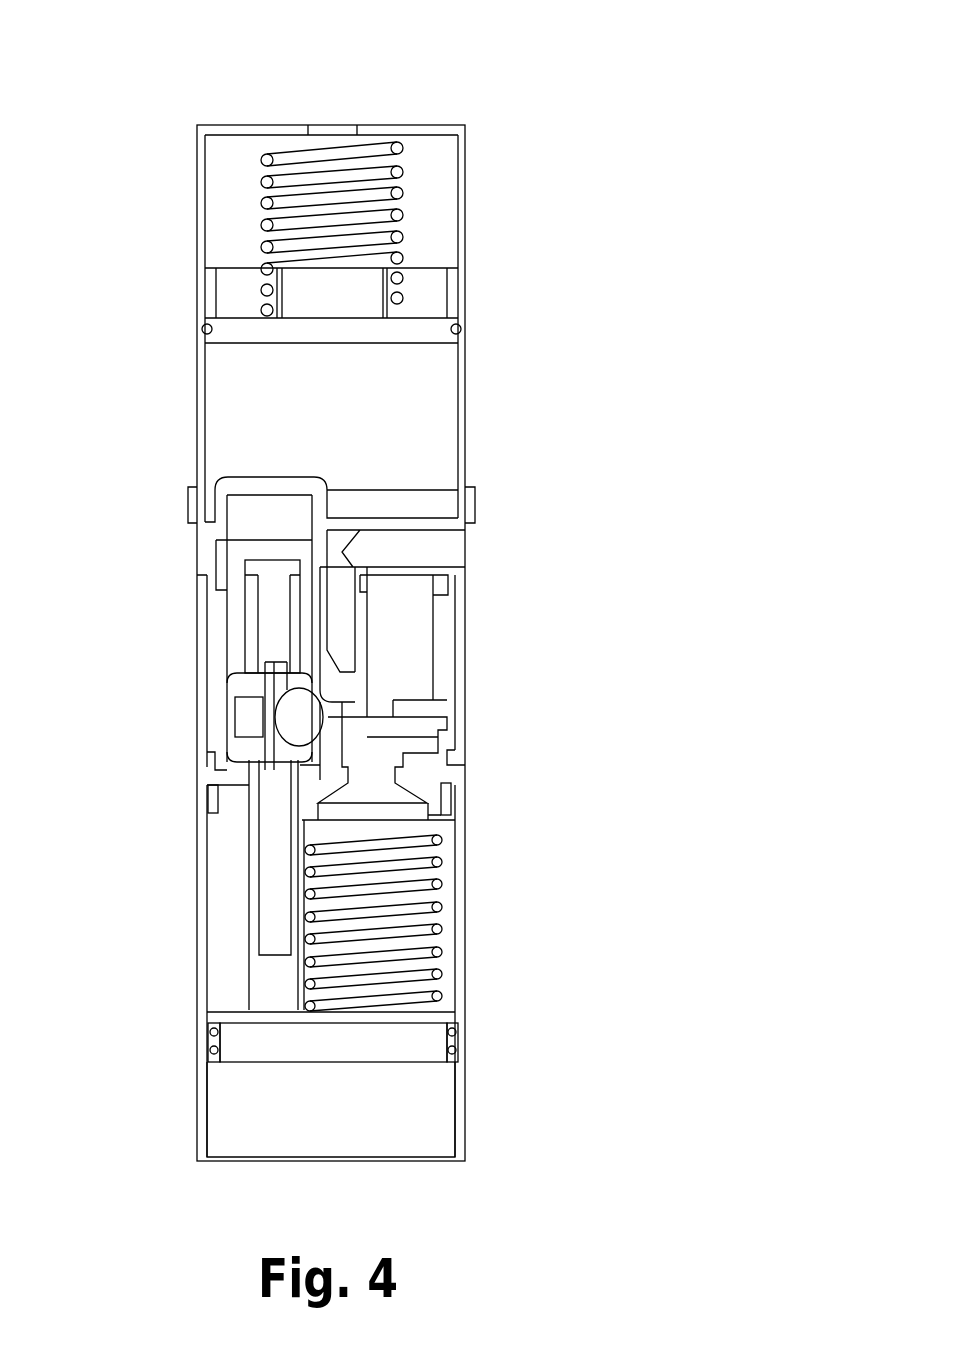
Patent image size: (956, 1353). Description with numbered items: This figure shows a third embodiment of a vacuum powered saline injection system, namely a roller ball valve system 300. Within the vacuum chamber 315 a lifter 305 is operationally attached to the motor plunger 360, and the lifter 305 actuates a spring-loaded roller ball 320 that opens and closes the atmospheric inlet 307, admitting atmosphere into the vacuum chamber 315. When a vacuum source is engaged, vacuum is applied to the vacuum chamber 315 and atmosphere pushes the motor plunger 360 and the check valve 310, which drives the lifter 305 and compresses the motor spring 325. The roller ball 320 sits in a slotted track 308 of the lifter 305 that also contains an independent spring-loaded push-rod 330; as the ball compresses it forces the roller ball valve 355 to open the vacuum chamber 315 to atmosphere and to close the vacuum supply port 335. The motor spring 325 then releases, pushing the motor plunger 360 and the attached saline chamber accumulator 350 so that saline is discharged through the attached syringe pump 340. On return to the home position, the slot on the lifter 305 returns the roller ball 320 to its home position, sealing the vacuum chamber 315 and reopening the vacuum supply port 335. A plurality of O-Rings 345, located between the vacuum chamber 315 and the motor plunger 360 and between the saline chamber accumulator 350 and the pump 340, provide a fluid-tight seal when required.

The roller ball valve system 300 is at (525, 70).
The lifter 305 is at (270, 888).
The atmospheric inlet 307 is at (330, 717).
The slotted track 308 is at (253, 862).
The check valve 310 is at (433, 650).
The vacuum chamber 315 is at (372, 1137).
The spring-loaded roller ball 320 is at (276, 743).
The motor spring 325 is at (456, 863).
The independent spring-loaded push-rod 330 is at (250, 787).
The vacuum supply port 335 is at (464, 778).
The syringe pump 340 is at (466, 203).
The O-Rings 345 is at (461, 328).
The saline chamber accumulator 350 is at (475, 342).
The roller ball valve 355 is at (227, 717).
The motor plunger 360 is at (398, 1050).